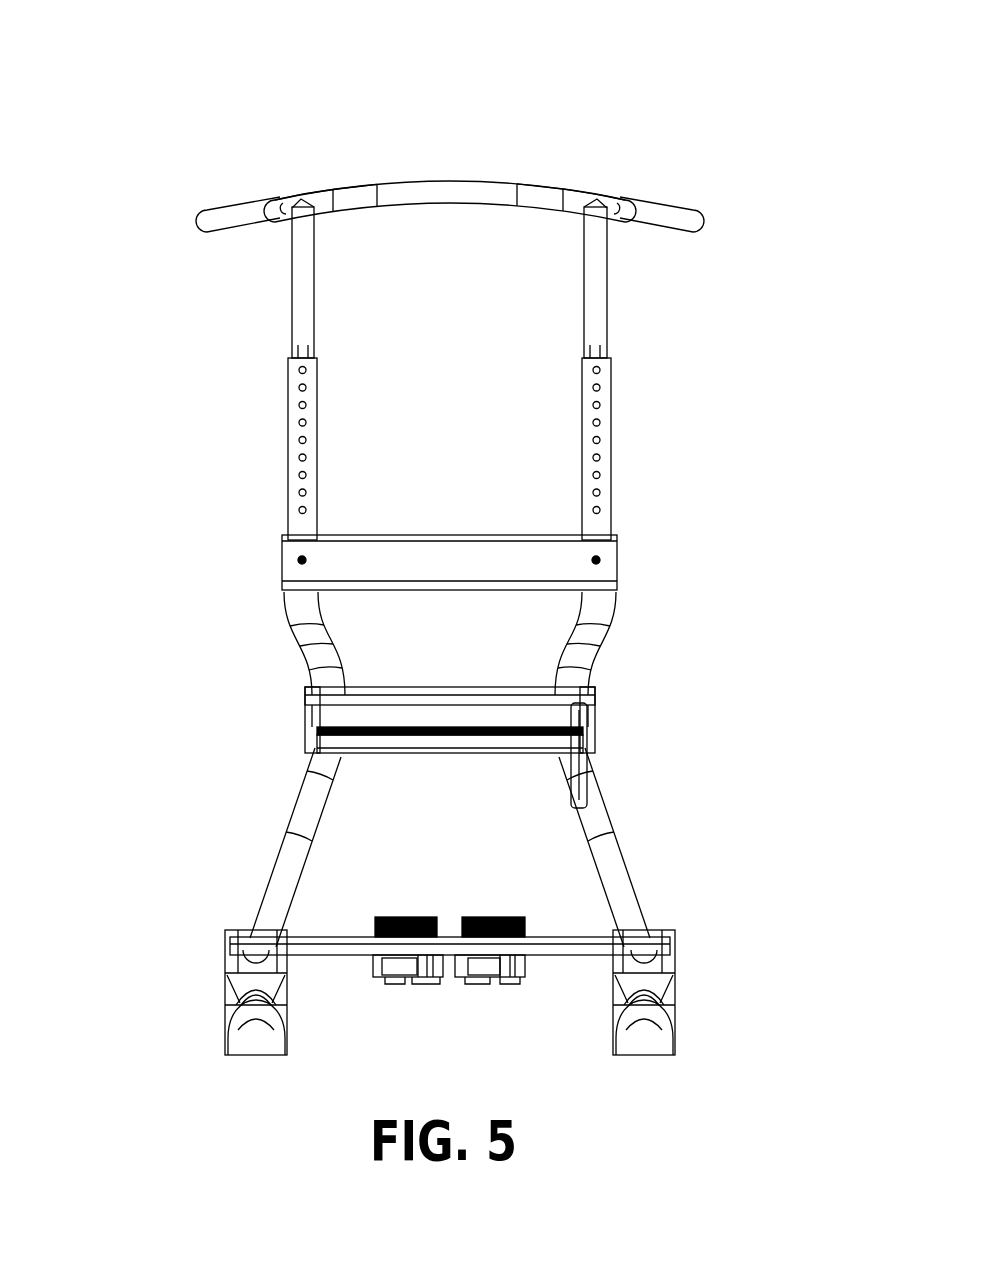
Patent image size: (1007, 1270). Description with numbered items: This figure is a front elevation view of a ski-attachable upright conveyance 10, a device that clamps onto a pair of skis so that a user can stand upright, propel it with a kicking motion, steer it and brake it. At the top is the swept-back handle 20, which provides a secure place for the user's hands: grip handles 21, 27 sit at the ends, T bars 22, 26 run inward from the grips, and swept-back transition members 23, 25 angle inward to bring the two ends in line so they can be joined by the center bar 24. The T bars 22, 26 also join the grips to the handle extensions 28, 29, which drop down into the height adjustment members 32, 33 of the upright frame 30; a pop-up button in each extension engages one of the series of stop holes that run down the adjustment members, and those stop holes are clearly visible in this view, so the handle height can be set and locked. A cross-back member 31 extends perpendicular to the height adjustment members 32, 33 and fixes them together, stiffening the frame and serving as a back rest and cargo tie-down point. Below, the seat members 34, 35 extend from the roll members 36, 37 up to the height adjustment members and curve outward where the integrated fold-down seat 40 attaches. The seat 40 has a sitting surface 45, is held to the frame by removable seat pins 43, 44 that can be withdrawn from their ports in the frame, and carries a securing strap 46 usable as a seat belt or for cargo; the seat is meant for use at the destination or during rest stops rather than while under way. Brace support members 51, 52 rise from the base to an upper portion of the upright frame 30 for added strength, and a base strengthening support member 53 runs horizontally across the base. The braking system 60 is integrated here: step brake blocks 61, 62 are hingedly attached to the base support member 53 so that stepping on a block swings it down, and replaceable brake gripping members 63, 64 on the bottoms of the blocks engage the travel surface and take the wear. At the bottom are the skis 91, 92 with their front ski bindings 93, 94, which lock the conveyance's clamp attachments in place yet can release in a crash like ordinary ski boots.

The ski-attachable upright conveyance 10 is at (752, 100).
The swept-back handle 20 is at (265, 65).
The grip handle 21 is at (682, 207).
The T bar 22 is at (588, 192).
The swept-back transition member 23 is at (542, 186).
The center bar 24 is at (453, 182).
The swept-back transition member 25 is at (368, 182).
The T bar 26 is at (320, 190).
The grip handle 27 is at (232, 207).
The handle extension 28 is at (608, 328).
The handle extension 29 is at (292, 297).
The upright frame 30 is at (183, 375).
The cross-back member 31 is at (415, 533).
The height adjustment member 32 is at (608, 460).
The height adjustment member 33 is at (290, 457).
The seat member 34 is at (650, 626).
The seat member 35 is at (262, 664).
The roll member 36 is at (665, 802).
The roll member 37 is at (255, 780).
The integrated fold-down seat 40 is at (718, 638).
The removable seat pin 43 is at (592, 692).
The removable seat pin 44 is at (308, 688).
The sitting surface 45 is at (415, 688).
The securing strap 46 is at (587, 762).
The brace support member 51 is at (610, 828).
The brace support member 52 is at (278, 866).
The base strengthening support member 53 is at (570, 935).
The braking system 60 is at (368, 1052).
The step brake block 61 is at (522, 963).
The step brake block 62 is at (378, 962).
The brake gripping member 63 is at (485, 973).
The brake gripping member 64 is at (400, 975).
The ski 91 is at (642, 1045).
The ski 92 is at (257, 1048).
The front ski binding 93 is at (668, 990).
The front ski binding 94 is at (235, 986).